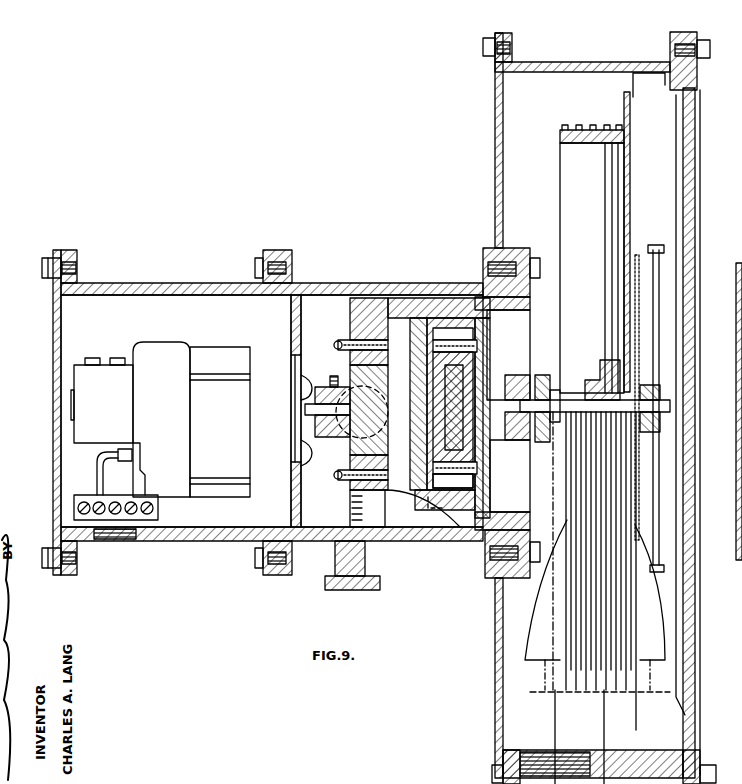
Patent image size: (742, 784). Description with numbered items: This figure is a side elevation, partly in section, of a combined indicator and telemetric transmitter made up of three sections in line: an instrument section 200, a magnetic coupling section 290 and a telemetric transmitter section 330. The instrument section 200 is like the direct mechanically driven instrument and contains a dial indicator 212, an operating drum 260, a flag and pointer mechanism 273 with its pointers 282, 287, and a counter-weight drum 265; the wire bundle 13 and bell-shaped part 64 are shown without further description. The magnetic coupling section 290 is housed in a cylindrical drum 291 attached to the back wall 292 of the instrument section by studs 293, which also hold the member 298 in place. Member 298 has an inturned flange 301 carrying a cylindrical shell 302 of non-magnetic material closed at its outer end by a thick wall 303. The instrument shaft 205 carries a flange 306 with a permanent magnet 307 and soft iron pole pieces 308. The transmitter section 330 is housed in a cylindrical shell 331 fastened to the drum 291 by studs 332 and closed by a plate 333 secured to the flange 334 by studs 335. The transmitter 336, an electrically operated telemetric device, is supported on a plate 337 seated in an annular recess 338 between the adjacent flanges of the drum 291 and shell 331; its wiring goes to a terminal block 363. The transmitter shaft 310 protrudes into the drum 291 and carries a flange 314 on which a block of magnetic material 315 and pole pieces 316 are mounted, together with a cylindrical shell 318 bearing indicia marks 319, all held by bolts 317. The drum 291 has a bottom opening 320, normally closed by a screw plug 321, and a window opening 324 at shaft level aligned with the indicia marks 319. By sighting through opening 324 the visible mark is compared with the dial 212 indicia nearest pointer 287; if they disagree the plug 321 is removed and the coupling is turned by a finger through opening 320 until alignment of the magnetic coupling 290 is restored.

The wire bundle 13 is at (604, 733).
The bell housing 64 is at (553, 733).
The instrument section 200 is at (556, 103).
The shaft 205 is at (505, 400).
The dial indicator 212 is at (624, 106).
The operating drum 260 is at (585, 176).
The counter-weight drum 265 is at (542, 424).
The flag and pointer mechanism 273 is at (656, 276).
The pointer 282 is at (638, 250).
The pointer 287 is at (640, 96).
The magnetic coupling section 290 is at (397, 328).
The cylindrical drum 291 is at (318, 284).
The back wall 292 is at (497, 176).
The studs 293 is at (520, 258).
The member 298 is at (505, 304).
The inturned flange 301 is at (482, 500).
The cylindrical shell 302 is at (437, 305).
The thick wall 303 is at (418, 342).
The flange 306 is at (475, 468).
The permanent magnet 307 is at (455, 480).
The pole pieces 308 is at (440, 488).
The shaft 310 is at (331, 426).
The flange 314 is at (350, 446).
The block of magnetic material 315 is at (366, 386).
The pole pieces 316 is at (350, 316).
The bolts 317 is at (337, 345).
The cylindrical shell 318 is at (350, 497).
The indicia marks 319 is at (350, 511).
The opening 320 is at (333, 545).
The screw plug 321 is at (380, 584).
The opening 324 is at (368, 412).
The telemetric transmitter section 330 is at (178, 318).
The cylindrical shell 331 is at (104, 283).
The studs 332 is at (262, 266).
The plate 333 is at (53, 320).
The flange 334 is at (77, 260).
The studs 335 is at (45, 262).
The transmitter 336 is at (170, 365).
The plate 337 is at (291, 319).
The annular recess 338 is at (293, 283).
The terminal block 363 is at (124, 520).